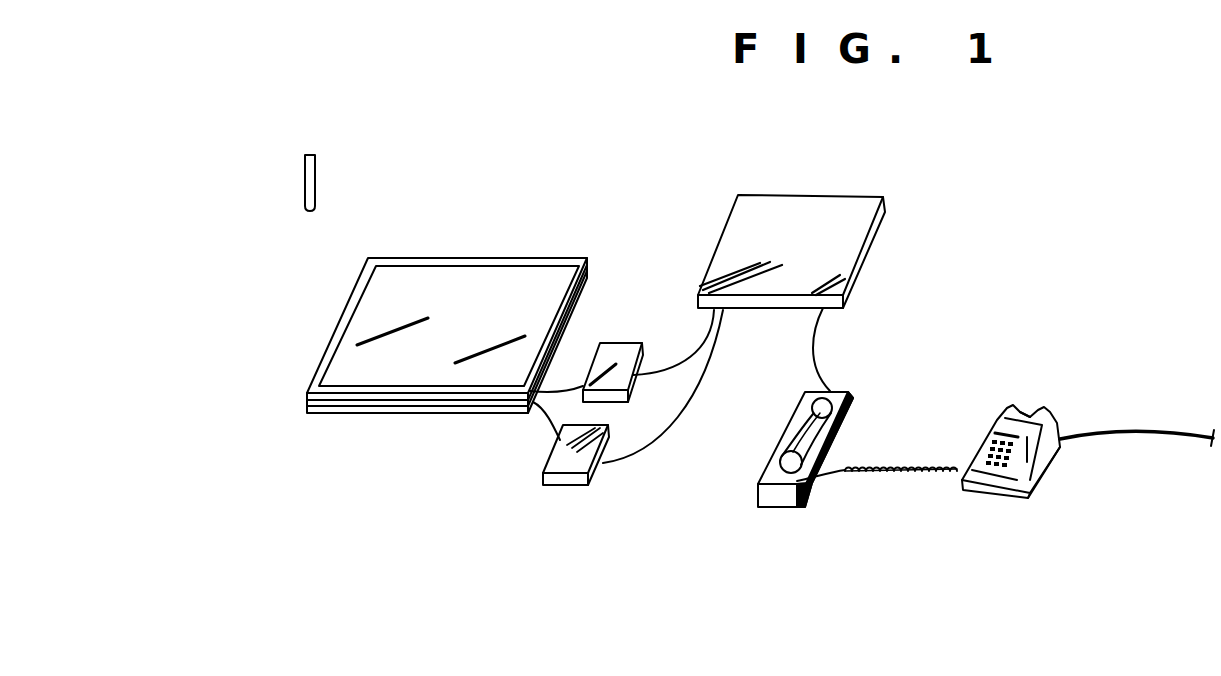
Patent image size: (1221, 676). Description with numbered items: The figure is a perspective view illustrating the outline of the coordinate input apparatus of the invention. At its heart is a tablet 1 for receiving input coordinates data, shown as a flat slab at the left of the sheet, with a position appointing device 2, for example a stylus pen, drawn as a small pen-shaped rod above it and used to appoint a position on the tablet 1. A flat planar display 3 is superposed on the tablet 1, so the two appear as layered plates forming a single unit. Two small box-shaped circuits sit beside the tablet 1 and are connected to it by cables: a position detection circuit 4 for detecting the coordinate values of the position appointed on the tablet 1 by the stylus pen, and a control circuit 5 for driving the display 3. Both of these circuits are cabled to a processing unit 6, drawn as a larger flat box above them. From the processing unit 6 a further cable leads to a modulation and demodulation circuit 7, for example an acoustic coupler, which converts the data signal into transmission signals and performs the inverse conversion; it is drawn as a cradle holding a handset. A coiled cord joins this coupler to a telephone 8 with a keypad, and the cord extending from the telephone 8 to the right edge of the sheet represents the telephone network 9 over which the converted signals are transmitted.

The tablet 1 is at (345, 416).
The position appointing device 2 is at (317, 177).
The flat planar display 3 is at (352, 334).
The position detection circuit 4 is at (570, 487).
The control circuit 5 is at (627, 347).
The processing unit 6 is at (833, 207).
The modulation and demodulation circuit 7 is at (767, 470).
The telephone 8 is at (987, 495).
The telephone network 9 is at (1125, 432).